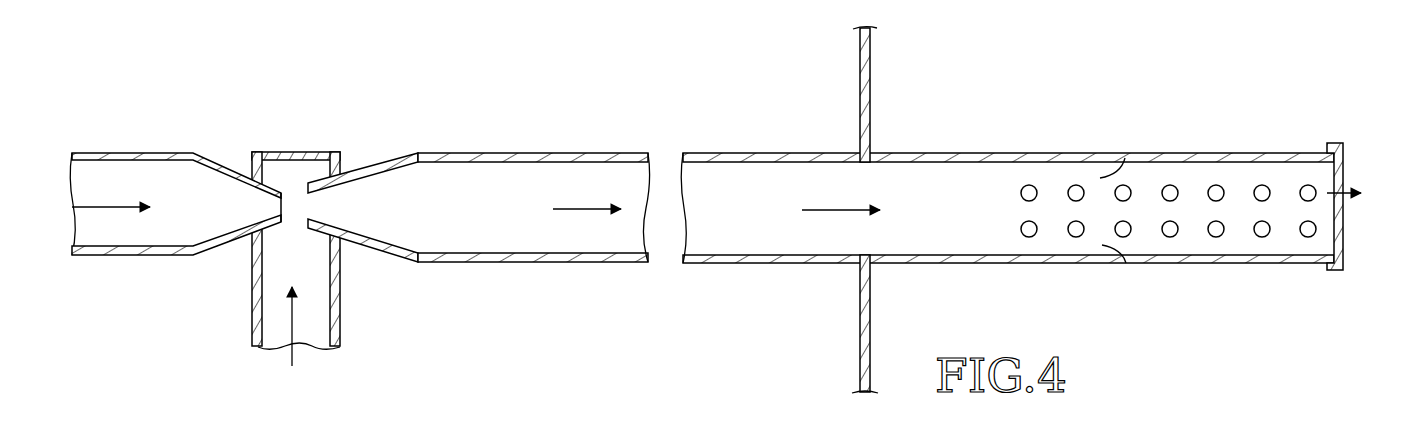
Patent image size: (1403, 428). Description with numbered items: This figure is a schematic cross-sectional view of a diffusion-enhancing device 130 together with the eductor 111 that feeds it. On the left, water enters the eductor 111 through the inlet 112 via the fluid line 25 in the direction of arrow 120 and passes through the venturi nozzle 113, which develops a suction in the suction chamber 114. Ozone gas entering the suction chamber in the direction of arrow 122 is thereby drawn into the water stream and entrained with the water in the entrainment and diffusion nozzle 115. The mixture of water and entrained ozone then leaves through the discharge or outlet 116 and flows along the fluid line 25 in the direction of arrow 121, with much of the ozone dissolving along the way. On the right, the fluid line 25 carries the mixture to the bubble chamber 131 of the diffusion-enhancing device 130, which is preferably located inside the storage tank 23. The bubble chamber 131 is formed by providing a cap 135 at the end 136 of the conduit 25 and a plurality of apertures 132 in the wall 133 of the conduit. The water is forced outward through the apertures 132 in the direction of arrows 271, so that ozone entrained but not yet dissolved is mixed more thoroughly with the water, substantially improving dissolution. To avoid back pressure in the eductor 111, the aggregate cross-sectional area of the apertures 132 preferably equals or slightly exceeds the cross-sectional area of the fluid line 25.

The eductor 111 is at (408, 112).
The inlet 112 is at (122, 187).
The venturi nozzle 113 is at (228, 212).
The suction chamber 114 is at (297, 166).
The entrainment and diffusion nozzle 115 is at (390, 218).
The discharge or outlet 116 is at (500, 218).
The arrow 120 is at (125, 208).
The arrow 121 is at (592, 209).
The arrow 122 is at (295, 331).
The fluid line 25 is at (155, 259).
The storage tank 23 is at (858, 52).
The diffusion-enhancing device 130 is at (1193, 111).
The bubble chamber 131 is at (1155, 218).
The apertures 132 is at (1028, 155).
The wall 133 is at (1240, 212).
The cap 135 is at (1347, 170).
The end 136 is at (1326, 163).
The arrows 271 is at (1126, 152).